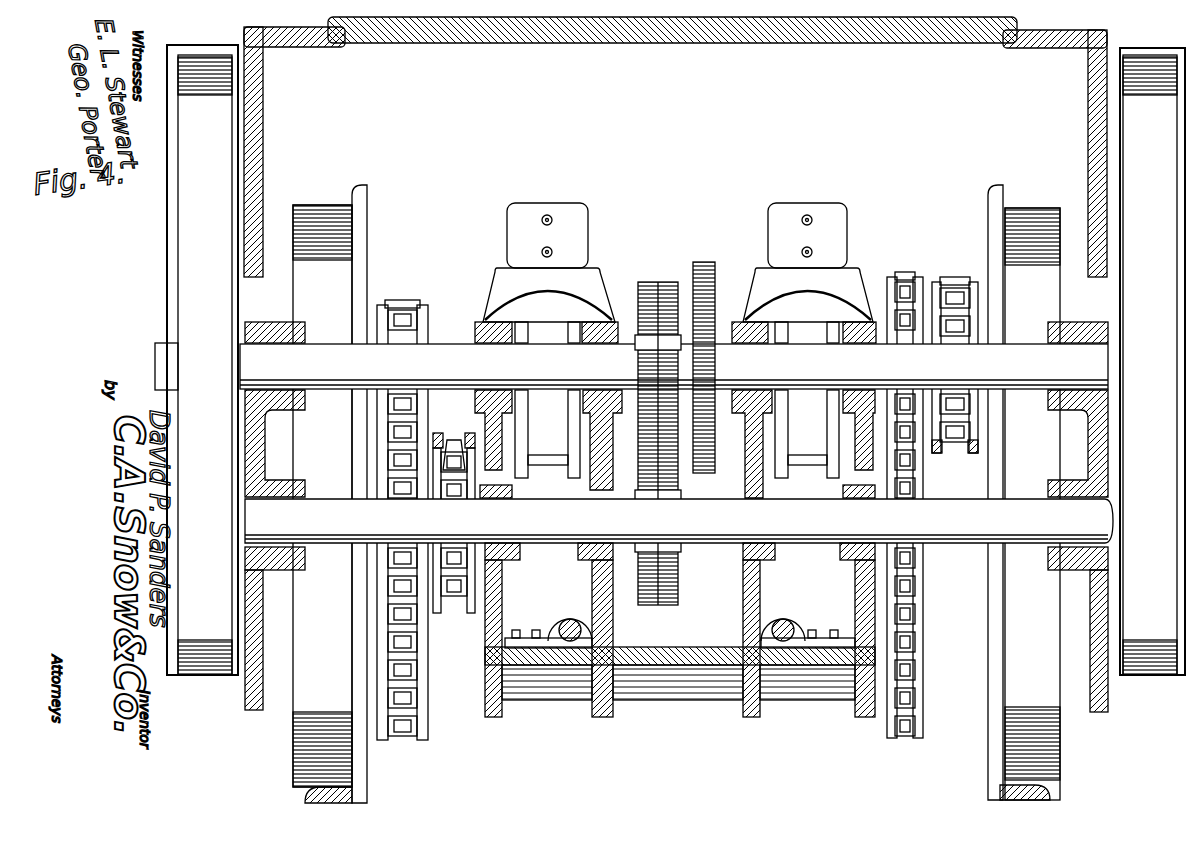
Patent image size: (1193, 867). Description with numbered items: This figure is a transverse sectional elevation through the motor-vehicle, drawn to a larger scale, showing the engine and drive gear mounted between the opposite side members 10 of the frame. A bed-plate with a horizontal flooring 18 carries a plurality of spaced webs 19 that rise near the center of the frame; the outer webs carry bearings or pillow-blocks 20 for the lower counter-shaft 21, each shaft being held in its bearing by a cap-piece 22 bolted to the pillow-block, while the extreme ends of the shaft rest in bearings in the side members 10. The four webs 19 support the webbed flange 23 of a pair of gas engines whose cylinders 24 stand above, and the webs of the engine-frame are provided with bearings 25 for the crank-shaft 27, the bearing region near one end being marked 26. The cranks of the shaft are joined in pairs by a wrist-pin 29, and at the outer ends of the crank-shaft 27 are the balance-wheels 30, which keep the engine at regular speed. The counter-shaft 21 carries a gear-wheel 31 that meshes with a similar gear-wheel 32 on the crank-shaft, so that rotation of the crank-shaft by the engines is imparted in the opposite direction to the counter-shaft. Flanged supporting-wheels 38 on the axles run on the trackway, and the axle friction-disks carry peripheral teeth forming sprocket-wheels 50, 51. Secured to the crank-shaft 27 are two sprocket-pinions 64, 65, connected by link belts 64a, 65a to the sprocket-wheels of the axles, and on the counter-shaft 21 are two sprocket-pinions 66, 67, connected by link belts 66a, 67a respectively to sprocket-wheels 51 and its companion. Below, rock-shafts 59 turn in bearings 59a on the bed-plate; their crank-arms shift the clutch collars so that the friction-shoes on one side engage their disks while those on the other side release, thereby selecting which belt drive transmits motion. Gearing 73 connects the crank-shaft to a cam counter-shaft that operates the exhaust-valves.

The side members 10 is at (245, 692).
The horizontal flooring 18 is at (710, 640).
The spaced webs 19 is at (592, 572).
The pillow-blocks 20 is at (510, 556).
The shaft 21 is at (679, 521).
The cap-piece 22 is at (512, 492).
The webbed flange 23 is at (515, 400).
The cylinders 24 is at (678, 263).
The bearings 25 is at (612, 322).
The bearing boss 26 is at (1078, 330).
The crank-shaft 27 is at (674, 366).
The wrist-pin 29 is at (528, 452).
The balance-wheels 30 is at (670, 360).
The gear-wheel 31 is at (652, 606).
The gear-wheel 32 is at (655, 282).
The flanged supporting-wheels 38 is at (676, 494).
The sprocket-wheel 50 is at (922, 708).
The sprocket-wheel 51 is at (425, 715).
The rock-shafts 59 is at (570, 620).
The bearings 59a is at (798, 650).
The sprocket-pinion 64 is at (958, 295).
The link belt 64a is at (963, 452).
The sprocket-pinion 65 is at (905, 300).
The link belt 65a is at (905, 575).
The sprocket-pinion 66 is at (454, 442).
The link belt 66a is at (462, 610).
The sprocket-pinion 67 is at (377, 515).
The link belt 67a is at (377, 608).
The gearing 73 is at (712, 262).